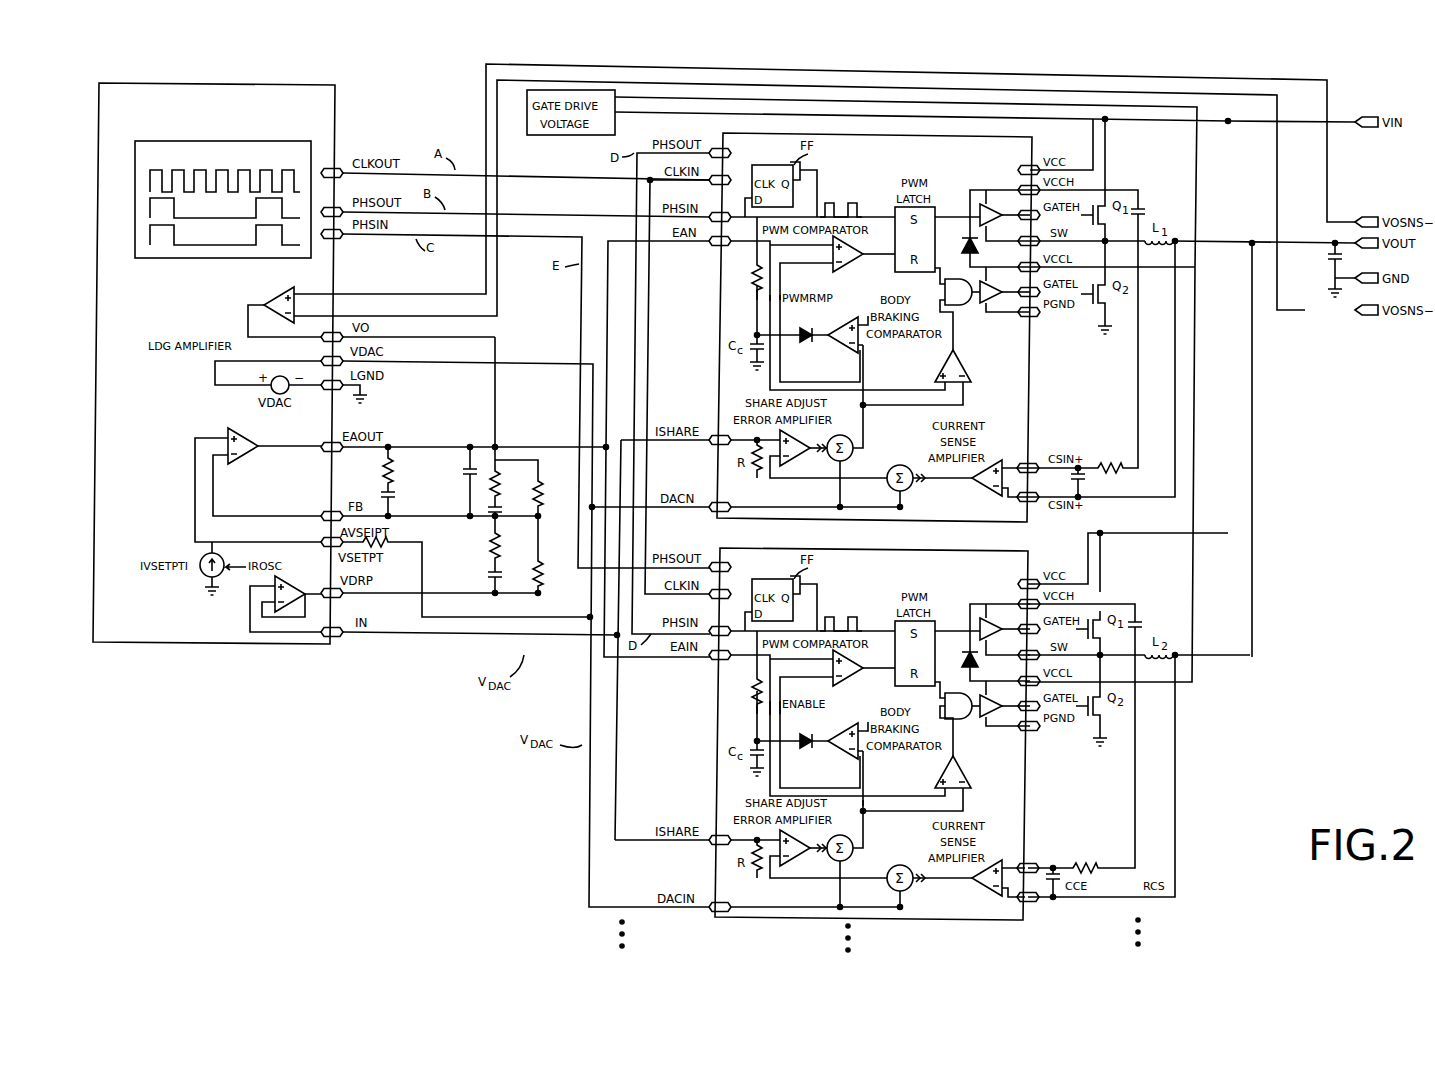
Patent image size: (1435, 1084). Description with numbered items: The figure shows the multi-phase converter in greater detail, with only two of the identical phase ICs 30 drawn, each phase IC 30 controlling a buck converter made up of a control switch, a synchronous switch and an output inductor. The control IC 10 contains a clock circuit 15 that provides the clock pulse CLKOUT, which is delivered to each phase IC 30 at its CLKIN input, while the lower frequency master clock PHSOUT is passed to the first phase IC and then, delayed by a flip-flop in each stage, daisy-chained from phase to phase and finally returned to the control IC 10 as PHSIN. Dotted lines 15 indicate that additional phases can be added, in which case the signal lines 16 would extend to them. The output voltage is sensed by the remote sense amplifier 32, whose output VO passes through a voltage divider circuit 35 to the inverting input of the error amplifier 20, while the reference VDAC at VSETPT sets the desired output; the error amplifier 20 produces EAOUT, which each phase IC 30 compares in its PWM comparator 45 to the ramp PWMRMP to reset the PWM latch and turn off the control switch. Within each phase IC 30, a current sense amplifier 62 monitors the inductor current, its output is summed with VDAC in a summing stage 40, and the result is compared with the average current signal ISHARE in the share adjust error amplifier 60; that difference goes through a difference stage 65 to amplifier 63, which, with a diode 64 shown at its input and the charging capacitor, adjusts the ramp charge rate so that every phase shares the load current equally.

The control IC 10 is at (293, 83).
The clock circuit 15 is at (172, 260).
The remote sense amplifier 32 is at (293, 292).
The error amplifier 20 is at (248, 449).
The voltage divider circuit 35 is at (469, 568).
The signal lines 16 is at (572, 862).
The phase IC 30 is at (1030, 390).
The PWM comparator 45 is at (824, 253).
The diode 64 is at (803, 333).
The amplifier 63 is at (838, 353).
The share adjust error amplifier 60 is at (806, 454).
The difference stage 65 is at (850, 455).
The summing stage 40 is at (905, 459).
The current sense amplifier 62 is at (975, 494).